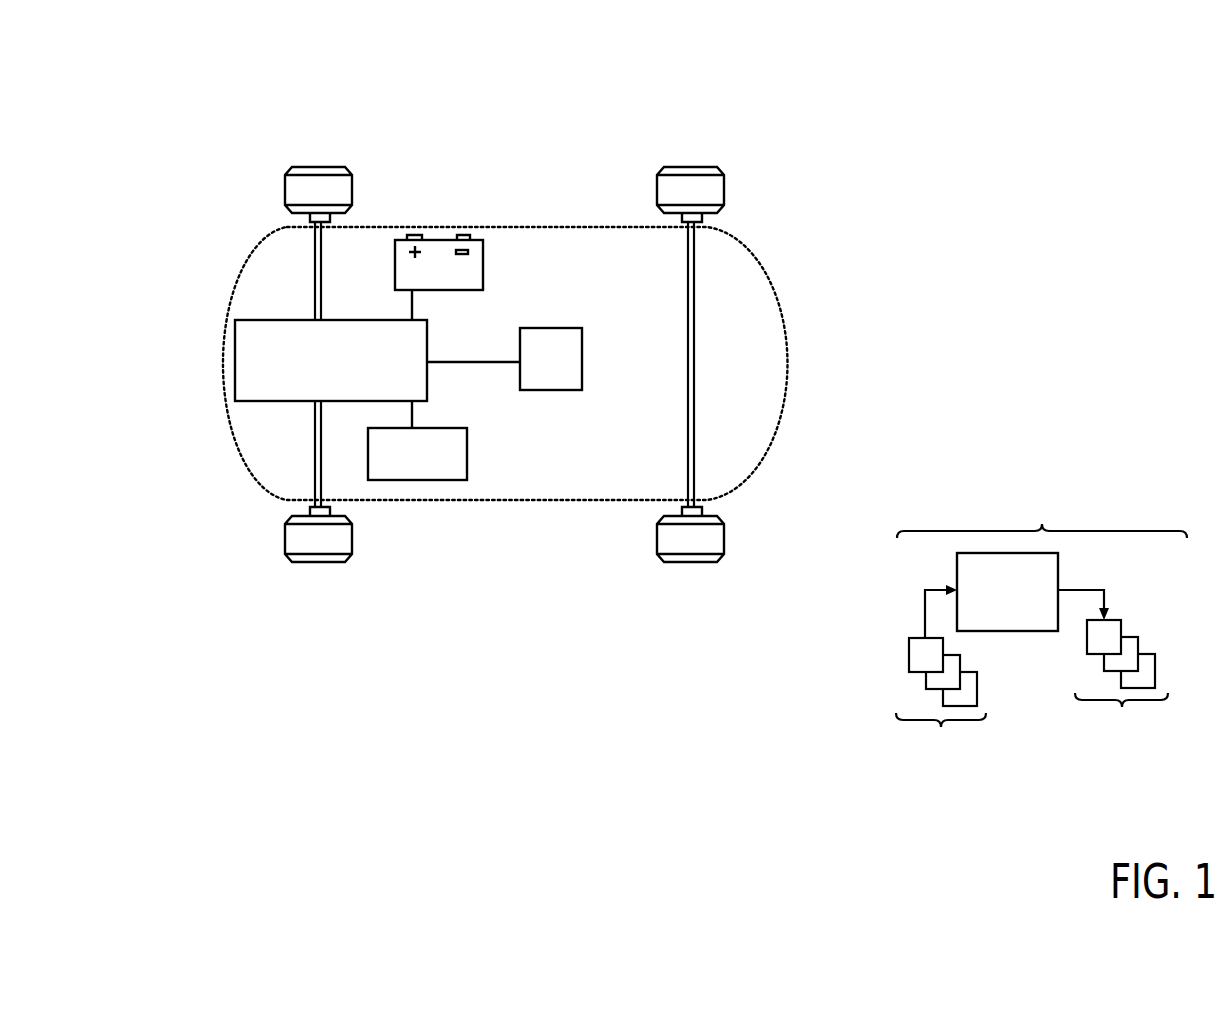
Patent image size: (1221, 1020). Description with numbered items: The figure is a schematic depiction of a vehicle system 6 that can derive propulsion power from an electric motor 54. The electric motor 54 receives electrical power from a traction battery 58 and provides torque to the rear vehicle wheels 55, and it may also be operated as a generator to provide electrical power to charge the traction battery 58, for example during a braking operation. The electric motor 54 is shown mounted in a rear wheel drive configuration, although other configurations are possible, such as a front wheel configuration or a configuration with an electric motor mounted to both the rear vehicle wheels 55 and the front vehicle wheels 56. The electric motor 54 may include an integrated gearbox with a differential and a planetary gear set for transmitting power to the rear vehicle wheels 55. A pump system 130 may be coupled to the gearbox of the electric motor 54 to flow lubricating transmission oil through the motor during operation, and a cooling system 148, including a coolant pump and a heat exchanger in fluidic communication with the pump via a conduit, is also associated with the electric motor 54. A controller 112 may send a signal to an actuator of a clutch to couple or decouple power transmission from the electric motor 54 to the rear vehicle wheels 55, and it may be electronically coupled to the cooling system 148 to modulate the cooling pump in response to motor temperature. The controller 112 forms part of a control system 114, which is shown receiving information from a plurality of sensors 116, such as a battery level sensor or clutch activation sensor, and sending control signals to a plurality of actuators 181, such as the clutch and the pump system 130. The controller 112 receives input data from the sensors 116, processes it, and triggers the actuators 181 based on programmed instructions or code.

The vehicle system 6 is at (817, 78).
The electric motor 54 is at (255, 403).
The rear vehicle wheels 55 is at (315, 563).
The front vehicle wheels 56 is at (688, 563).
The traction battery 58 is at (413, 236).
The pump system 130 is at (445, 428).
The cooling system 148 is at (540, 328).
The controller 112 is at (1007, 592).
The control system 114 is at (1041, 623).
The sensors 116 is at (941, 707).
The actuators 181 is at (1121, 688).